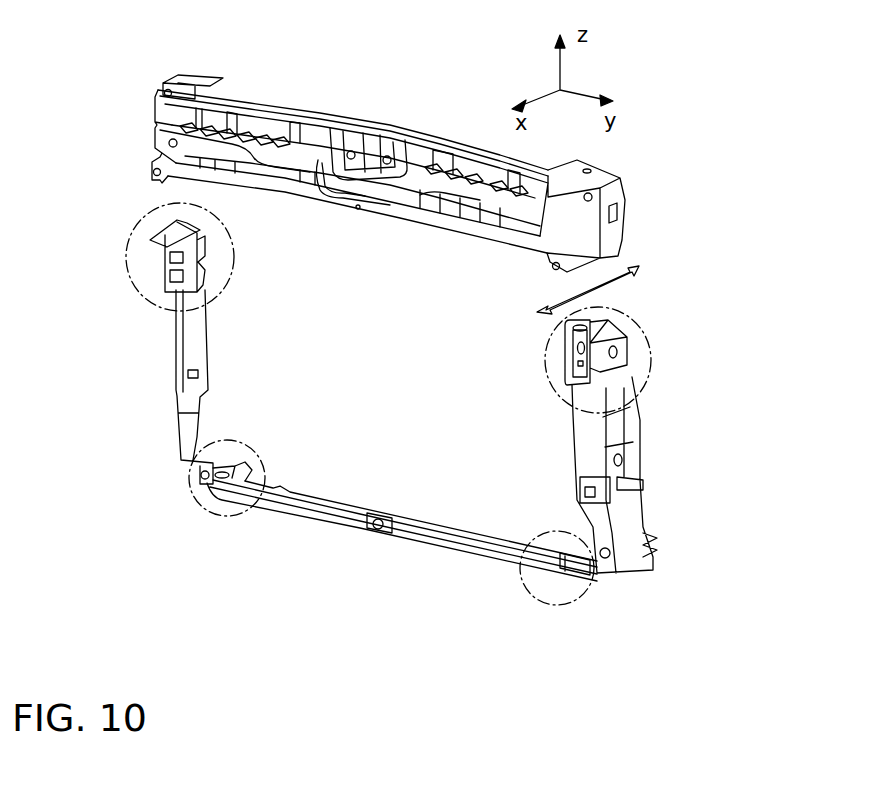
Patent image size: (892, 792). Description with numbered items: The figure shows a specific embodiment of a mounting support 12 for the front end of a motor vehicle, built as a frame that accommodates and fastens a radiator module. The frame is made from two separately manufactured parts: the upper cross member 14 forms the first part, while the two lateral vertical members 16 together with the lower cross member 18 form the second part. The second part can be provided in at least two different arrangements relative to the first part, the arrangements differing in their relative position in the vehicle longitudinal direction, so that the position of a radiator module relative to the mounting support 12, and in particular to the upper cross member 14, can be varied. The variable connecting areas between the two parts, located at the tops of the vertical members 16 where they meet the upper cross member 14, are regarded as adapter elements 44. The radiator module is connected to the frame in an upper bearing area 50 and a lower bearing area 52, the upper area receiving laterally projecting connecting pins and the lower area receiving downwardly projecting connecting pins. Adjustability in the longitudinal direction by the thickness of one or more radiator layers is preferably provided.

The mounting support 12 is at (404, 113).
The upper cross member 14 is at (320, 115).
The vertical members 16 is at (188, 358).
The lower cross member 18 is at (355, 522).
The adapter elements 44 is at (170, 223).
The upper bearing area 50 is at (124, 268).
The lower bearing area 52 is at (213, 518).